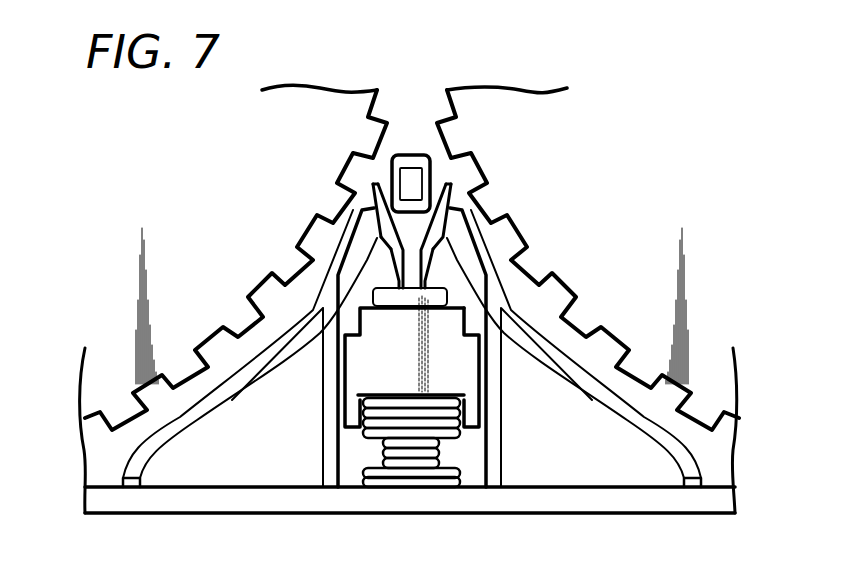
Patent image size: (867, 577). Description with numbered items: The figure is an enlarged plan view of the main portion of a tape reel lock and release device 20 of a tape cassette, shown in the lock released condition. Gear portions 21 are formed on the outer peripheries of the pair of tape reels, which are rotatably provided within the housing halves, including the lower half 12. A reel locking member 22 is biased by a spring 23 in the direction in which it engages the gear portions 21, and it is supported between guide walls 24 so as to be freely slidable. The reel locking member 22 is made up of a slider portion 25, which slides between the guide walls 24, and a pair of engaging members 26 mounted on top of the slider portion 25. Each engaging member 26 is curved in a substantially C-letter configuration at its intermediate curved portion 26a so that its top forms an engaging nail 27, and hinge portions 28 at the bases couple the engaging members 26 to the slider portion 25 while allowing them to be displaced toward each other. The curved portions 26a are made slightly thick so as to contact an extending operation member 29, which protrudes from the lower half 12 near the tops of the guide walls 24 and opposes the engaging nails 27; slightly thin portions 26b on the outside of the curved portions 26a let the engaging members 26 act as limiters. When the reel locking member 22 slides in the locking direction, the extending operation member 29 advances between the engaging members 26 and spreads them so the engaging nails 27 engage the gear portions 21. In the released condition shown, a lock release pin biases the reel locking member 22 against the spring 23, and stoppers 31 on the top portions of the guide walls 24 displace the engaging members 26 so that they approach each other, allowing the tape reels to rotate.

The lower half 12 is at (571, 497).
The tape reel lock and release device 20 is at (330, 518).
The gear portions 21 is at (635, 365).
The reel locking member 22 is at (358, 372).
The spring 23 is at (414, 470).
The guide walls 24 is at (323, 440).
The slider portion 25 is at (467, 365).
The engaging members 26 is at (380, 240).
The curved portions 26a is at (446, 192).
The thin portions 26b is at (390, 252).
The engaging nails 27 is at (371, 183).
The hinge portions 28 is at (372, 289).
The extending operation member 29 is at (413, 156).
The stoppers 31 is at (352, 208).